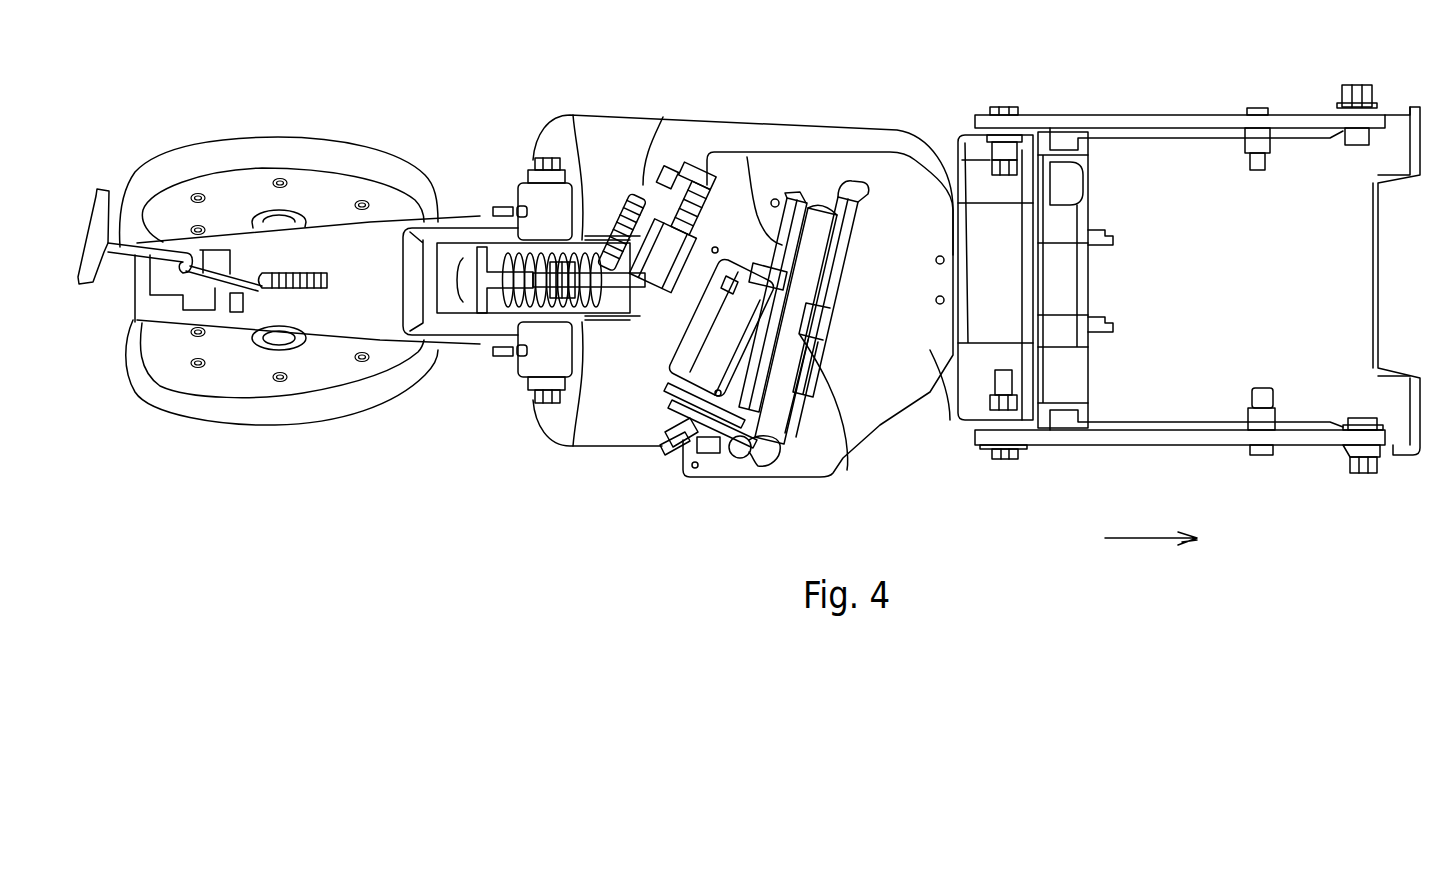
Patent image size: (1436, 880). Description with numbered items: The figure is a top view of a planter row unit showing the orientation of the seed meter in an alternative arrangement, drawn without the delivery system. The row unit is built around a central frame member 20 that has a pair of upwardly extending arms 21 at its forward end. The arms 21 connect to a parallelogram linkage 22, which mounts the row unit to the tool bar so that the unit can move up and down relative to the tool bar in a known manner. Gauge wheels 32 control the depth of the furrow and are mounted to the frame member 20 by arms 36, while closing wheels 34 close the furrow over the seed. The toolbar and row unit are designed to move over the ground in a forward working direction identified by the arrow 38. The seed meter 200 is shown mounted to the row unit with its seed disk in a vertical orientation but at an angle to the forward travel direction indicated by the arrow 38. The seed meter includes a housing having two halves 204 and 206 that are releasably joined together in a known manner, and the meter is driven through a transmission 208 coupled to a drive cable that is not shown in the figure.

The closing wheels 34 is at (256, 143).
The central frame member 20 is at (383, 262).
The arms 36 is at (582, 195).
The gauge wheels 32 is at (607, 135).
The transmission 208 is at (648, 162).
The housing half 206 is at (764, 252).
The seed meter 200 is at (886, 278).
The housing half 204 is at (843, 462).
The upwardly extending arms 21 is at (975, 138).
The parallelogram linkage 22 is at (1150, 122).
The arrow 38 is at (1140, 539).